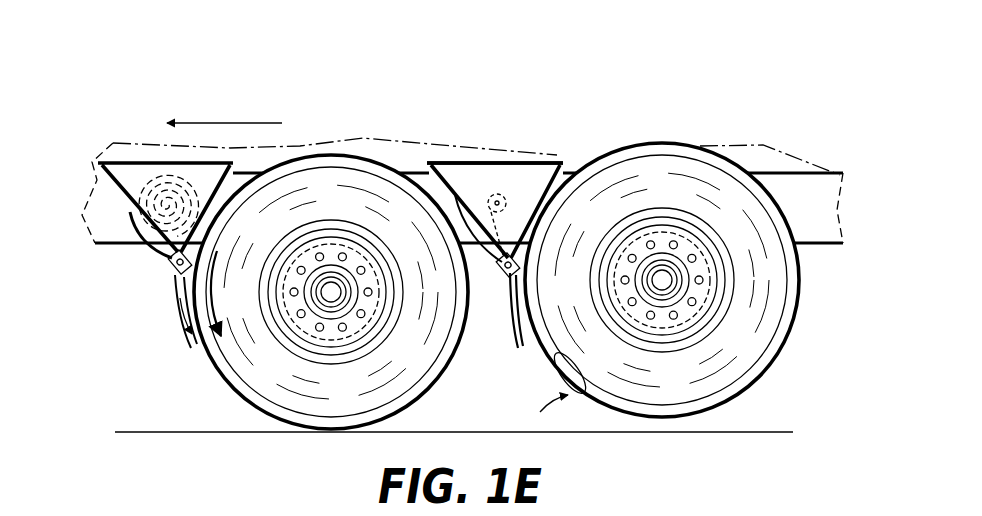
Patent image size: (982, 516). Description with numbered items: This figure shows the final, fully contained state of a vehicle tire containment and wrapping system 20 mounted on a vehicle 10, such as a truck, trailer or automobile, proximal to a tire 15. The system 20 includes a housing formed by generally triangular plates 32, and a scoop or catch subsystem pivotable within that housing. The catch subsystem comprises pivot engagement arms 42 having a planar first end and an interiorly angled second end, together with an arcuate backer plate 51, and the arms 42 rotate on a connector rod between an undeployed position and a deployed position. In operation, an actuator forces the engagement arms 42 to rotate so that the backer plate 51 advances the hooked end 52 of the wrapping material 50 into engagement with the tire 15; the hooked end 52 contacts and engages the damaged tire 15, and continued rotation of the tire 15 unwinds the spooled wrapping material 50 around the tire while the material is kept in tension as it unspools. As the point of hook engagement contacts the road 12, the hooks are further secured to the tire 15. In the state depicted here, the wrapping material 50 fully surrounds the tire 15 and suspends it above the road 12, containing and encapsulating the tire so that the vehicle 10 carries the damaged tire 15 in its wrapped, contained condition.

The vehicle 10 is at (74, 88).
The road 12 is at (753, 432).
The tire 15 is at (770, 328).
The vehicle tire containment and wrapping system 20 is at (137, 125).
The triangular plate 32 is at (517, 167).
The pivot engagement arm 42 is at (501, 272).
The wrapping material 50 is at (504, 198).
The backer plate 51 is at (515, 352).
The hooked end 52 is at (583, 393).